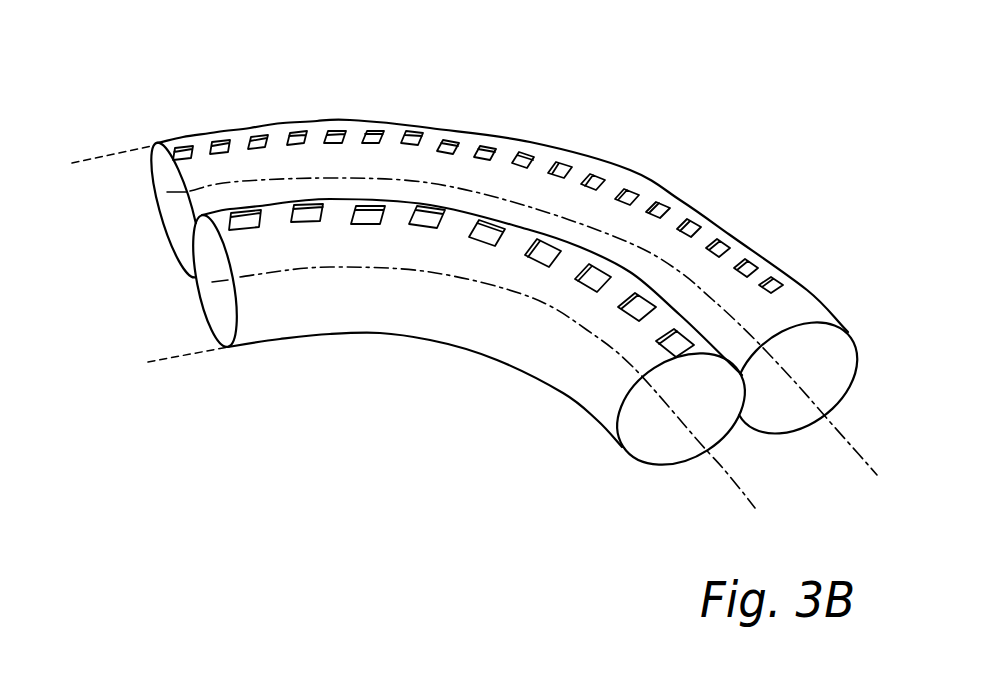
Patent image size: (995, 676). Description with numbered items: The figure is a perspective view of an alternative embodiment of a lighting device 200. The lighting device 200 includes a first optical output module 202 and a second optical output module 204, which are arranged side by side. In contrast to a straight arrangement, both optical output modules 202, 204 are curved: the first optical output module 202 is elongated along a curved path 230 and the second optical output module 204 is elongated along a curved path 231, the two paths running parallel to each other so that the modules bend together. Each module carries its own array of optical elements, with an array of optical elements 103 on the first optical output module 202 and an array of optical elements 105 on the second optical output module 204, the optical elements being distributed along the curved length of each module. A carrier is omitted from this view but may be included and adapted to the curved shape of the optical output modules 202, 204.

The lighting device 200 is at (690, 148).
The first optical output module 202 is at (622, 482).
The array of optical elements 103 is at (657, 347).
The array of optical elements 105 is at (763, 290).
The second optical output module 204 is at (840, 402).
The curved path 230 is at (727, 473).
The curved path 231 is at (855, 448).